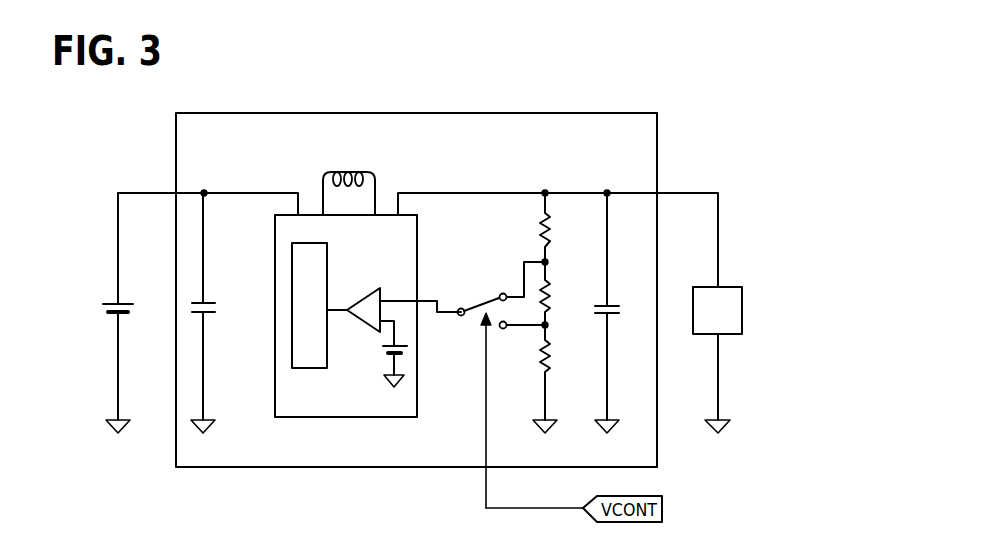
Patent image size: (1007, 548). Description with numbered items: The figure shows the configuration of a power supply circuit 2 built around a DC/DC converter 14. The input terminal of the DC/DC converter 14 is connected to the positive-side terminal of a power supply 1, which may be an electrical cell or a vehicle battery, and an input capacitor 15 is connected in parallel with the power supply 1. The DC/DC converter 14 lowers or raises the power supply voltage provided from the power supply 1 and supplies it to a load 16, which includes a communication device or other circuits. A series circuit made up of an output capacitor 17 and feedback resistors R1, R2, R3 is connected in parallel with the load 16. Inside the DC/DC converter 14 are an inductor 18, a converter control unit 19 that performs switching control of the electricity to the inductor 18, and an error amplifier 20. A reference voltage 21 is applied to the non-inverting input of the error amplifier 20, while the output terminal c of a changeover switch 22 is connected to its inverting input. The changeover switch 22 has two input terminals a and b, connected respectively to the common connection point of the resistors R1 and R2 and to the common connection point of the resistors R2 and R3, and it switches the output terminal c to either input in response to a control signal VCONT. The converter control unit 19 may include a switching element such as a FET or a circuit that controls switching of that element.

The power supply 1 is at (103, 303).
The power supply circuit 2 is at (418, 113).
The DC/DC converter 14 is at (348, 418).
The input capacitor 15 is at (208, 302).
The load 16 is at (727, 287).
The output capacitor 17 is at (612, 303).
The inductor 18 is at (348, 172).
The converter control unit 19 is at (301, 369).
The error amplifier 20 is at (363, 324).
The reference voltage 21 is at (385, 353).
The changeover switch 22 is at (485, 305).
The resistor R1 is at (552, 233).
The resistor R2 is at (552, 290).
The resistor R3 is at (552, 357).